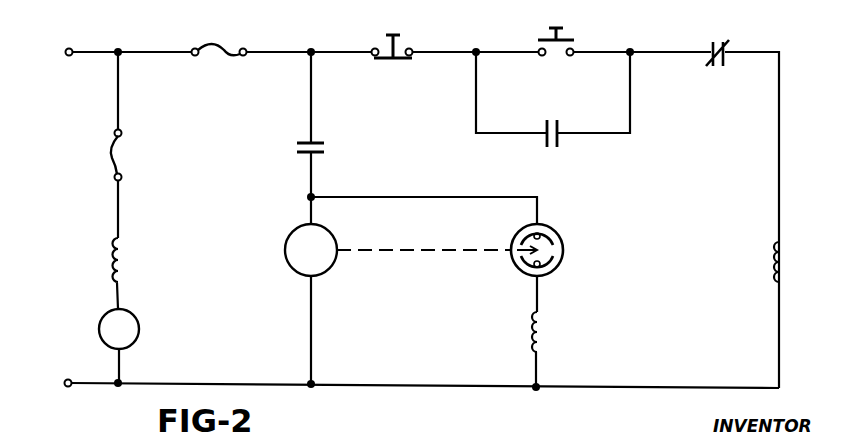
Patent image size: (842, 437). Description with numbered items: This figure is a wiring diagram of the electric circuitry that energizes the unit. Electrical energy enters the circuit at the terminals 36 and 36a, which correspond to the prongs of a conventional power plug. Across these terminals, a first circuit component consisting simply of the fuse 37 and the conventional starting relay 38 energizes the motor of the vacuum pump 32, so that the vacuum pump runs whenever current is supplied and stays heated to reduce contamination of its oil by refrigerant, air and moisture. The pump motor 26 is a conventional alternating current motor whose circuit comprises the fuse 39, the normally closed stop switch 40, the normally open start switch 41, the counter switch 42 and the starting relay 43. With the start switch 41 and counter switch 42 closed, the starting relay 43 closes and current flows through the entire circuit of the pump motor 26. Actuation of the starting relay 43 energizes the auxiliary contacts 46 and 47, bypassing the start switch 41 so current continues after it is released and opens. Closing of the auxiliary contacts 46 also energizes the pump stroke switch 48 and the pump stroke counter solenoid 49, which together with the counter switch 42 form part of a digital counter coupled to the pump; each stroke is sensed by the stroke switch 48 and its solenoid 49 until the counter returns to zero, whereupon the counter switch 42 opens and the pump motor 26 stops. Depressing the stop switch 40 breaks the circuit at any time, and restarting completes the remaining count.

The terminal 36 is at (66, 51).
The terminal 36a is at (65, 380).
The fuse 37 is at (110, 155).
The starting relay 38 is at (110, 259).
The vacuum pump 32 is at (98, 330).
The fuse 39 is at (224, 45).
The stop switch 40 is at (388, 33).
The start switch 41 is at (548, 37).
The counter switch 42 is at (713, 41).
The auxiliary contacts 46 is at (296, 148).
The auxiliary contacts 47 is at (548, 119).
The pump motor 26 is at (285, 250).
The pump stroke switch 48 is at (548, 241).
The starting relay 43 is at (772, 259).
The pump stroke counter solenoid 49 is at (529, 334).